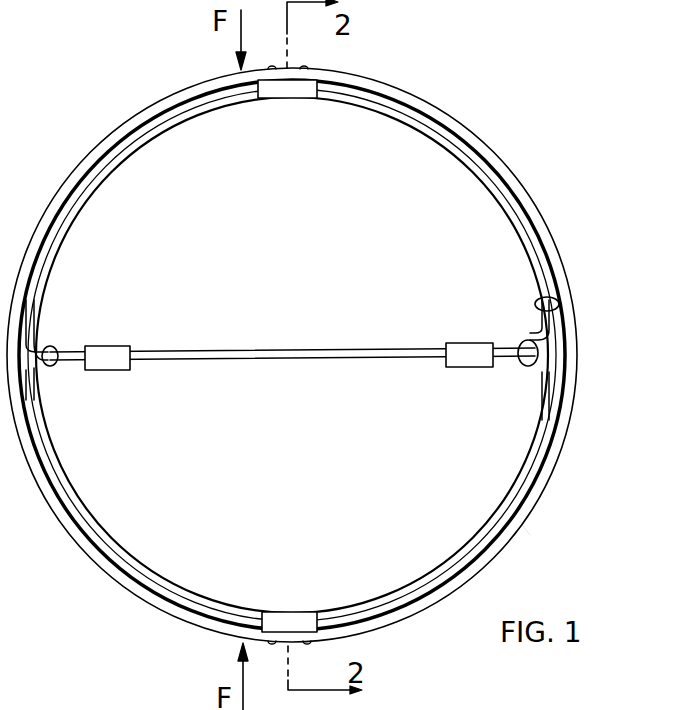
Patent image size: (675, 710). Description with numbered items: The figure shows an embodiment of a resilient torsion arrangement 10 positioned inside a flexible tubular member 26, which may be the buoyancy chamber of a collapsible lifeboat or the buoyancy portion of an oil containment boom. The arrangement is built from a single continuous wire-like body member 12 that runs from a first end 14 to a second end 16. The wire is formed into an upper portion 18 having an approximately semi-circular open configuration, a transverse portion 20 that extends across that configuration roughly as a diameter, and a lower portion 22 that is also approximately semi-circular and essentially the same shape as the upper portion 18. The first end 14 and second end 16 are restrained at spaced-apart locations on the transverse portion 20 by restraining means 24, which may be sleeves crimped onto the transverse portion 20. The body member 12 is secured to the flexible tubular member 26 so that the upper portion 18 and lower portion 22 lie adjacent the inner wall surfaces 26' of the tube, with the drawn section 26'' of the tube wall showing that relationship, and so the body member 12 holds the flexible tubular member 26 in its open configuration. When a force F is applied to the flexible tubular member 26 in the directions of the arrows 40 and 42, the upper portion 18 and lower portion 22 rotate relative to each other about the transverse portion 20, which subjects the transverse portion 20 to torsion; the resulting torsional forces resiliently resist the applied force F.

The resilient torsion arrangement 10 is at (527, 172).
The wire-like body member 12 is at (548, 260).
The first end 14 is at (50, 366).
The second end 16 is at (518, 368).
The upper portion 18 is at (530, 220).
The transverse portion 20 is at (198, 352).
The lower portion 22 is at (552, 450).
The restraining means 24 is at (117, 344).
The flexible tubular member 26 is at (333, 355).
The inner wall surfaces 26' is at (586, 311).
The band lower end 26'' is at (558, 536).
The arrow 40 is at (240, 42).
The arrow 42 is at (243, 668).